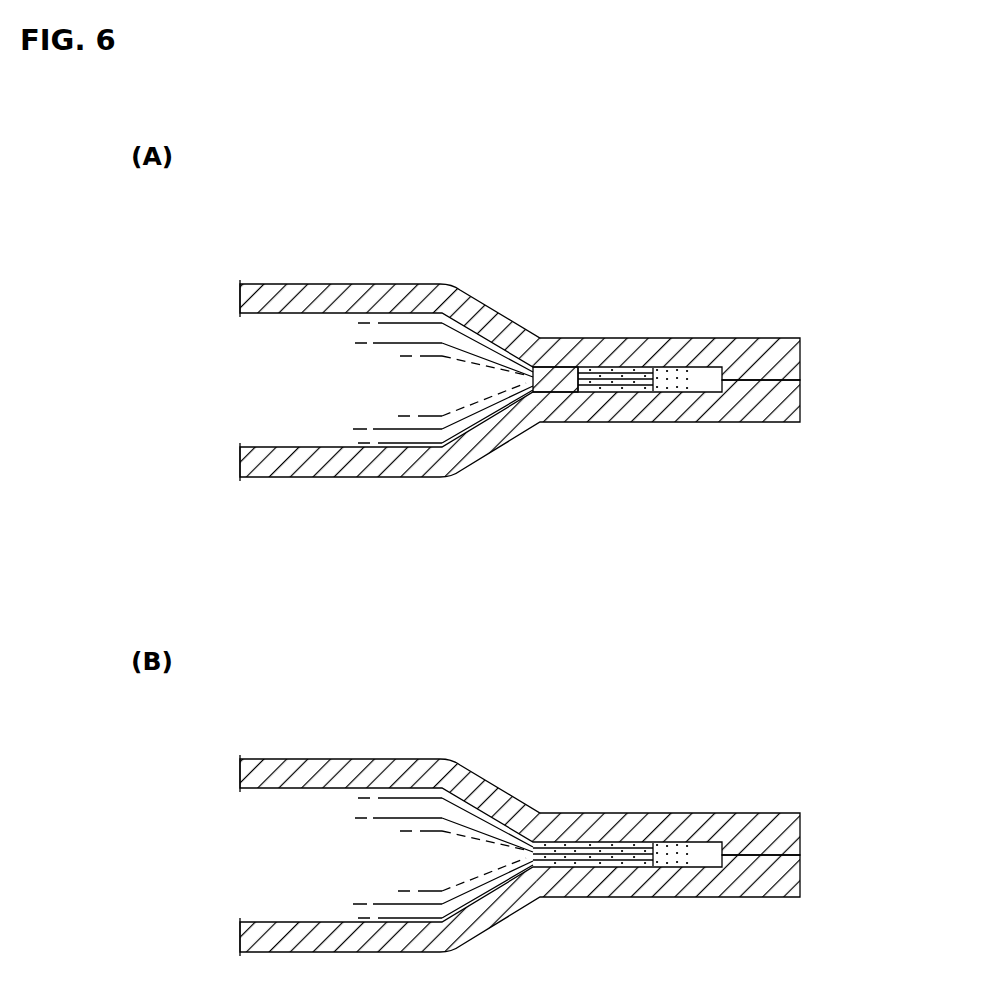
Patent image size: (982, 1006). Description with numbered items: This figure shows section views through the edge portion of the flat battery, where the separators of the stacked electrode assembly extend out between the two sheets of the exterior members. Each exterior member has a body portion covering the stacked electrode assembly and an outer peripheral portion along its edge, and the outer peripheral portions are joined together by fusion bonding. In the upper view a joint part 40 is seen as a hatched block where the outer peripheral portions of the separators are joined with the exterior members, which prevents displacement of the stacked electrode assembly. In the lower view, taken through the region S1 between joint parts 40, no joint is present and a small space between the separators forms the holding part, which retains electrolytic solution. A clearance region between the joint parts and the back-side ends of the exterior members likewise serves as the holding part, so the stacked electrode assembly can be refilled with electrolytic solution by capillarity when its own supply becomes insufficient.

The joint parts 40 is at (565, 370).
The region between joint parts S1 is at (560, 806).